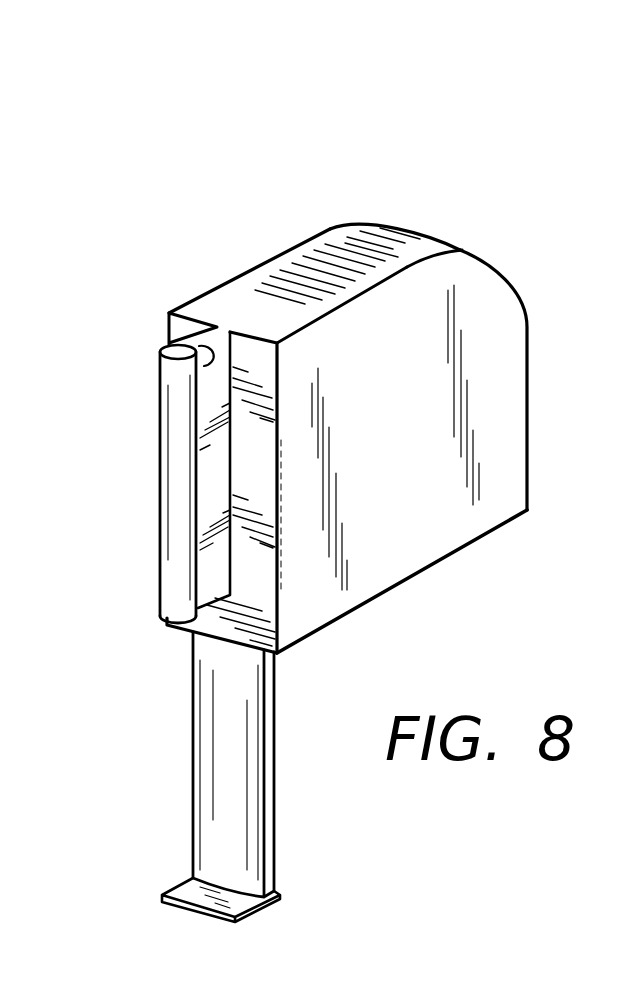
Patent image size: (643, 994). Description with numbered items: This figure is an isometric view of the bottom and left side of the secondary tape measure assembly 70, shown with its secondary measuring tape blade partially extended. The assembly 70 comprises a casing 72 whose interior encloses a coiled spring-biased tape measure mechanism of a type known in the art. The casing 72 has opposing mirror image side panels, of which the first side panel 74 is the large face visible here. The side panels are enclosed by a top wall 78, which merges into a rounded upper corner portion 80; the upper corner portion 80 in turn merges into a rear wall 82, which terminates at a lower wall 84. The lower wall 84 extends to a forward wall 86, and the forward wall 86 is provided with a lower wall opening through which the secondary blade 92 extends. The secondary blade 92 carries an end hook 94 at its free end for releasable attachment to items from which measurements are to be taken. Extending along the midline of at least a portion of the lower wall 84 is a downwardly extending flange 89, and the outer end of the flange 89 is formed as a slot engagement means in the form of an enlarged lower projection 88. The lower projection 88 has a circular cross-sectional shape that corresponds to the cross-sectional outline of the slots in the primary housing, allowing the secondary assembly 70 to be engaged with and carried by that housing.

The secondary tape measure assembly 70 is at (311, 216).
The casing 72 is at (194, 298).
The first side panel 74 is at (404, 519).
The top wall 78 is at (528, 408).
The rounded upper corner portion 80 is at (413, 247).
The rear wall 82 is at (245, 297).
The lower wall 84 is at (258, 565).
The forward wall 86 is at (497, 532).
The enlarged lower projection 88 is at (175, 418).
The downwardly extending flange 89 is at (190, 342).
The secondary blade 92 is at (225, 837).
The end hook 94 is at (183, 892).